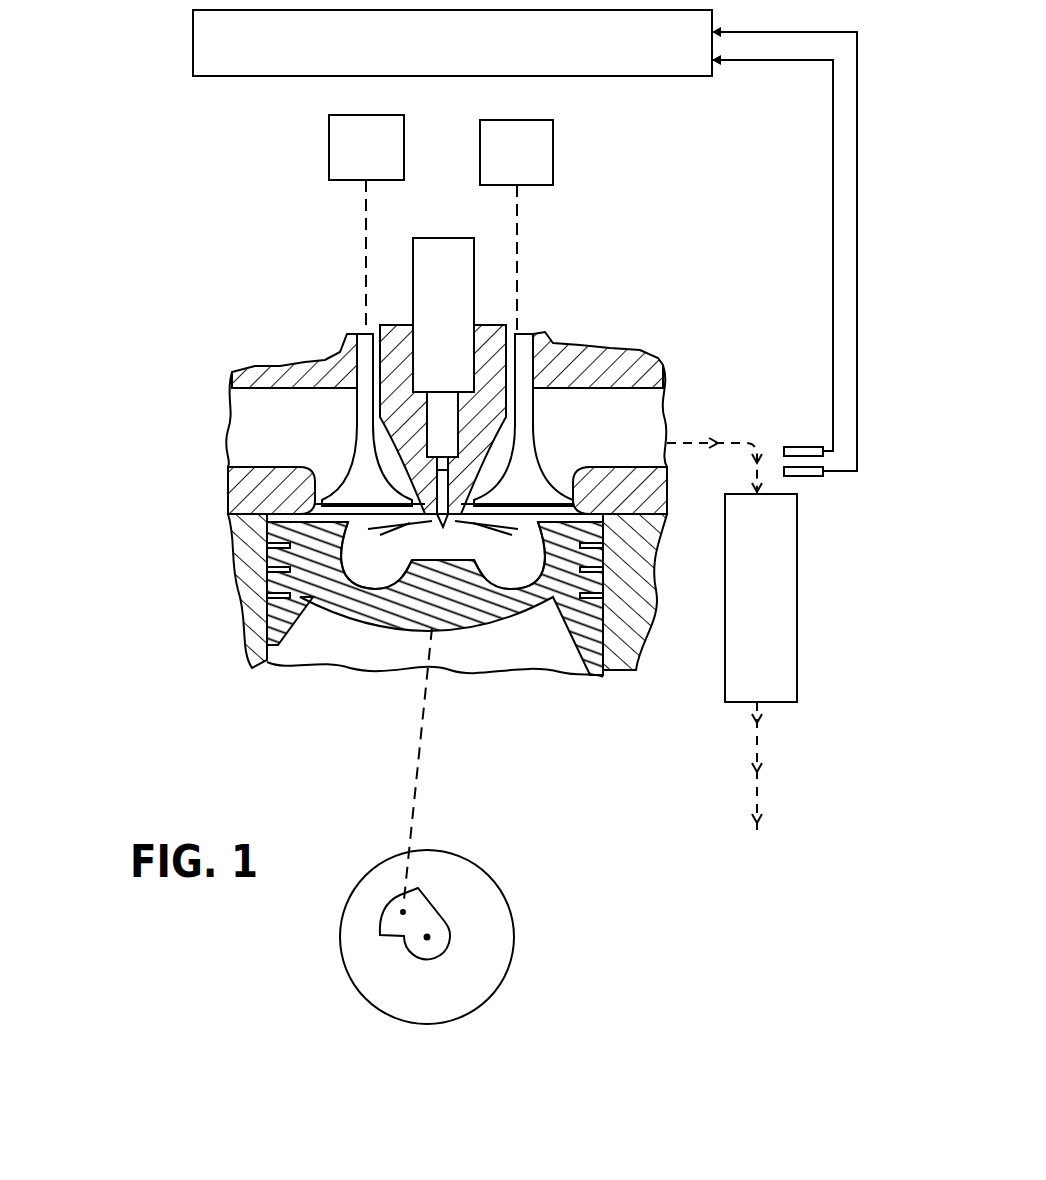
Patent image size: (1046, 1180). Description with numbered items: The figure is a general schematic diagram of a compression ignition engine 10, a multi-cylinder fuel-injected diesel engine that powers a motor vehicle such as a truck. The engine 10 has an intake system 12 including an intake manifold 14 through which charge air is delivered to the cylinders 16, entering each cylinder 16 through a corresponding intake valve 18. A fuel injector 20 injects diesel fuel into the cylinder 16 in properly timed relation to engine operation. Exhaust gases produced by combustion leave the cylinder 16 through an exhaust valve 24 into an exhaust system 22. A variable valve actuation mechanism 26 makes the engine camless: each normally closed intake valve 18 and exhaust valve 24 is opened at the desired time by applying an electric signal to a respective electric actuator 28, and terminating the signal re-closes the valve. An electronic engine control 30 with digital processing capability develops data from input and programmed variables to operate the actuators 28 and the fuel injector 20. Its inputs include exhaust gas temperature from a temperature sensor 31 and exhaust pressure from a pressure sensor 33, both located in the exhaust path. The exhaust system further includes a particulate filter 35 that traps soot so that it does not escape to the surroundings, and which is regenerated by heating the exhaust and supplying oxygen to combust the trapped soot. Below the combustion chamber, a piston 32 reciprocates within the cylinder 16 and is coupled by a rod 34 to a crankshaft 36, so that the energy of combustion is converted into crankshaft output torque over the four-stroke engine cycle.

The internal combustion engine 10 is at (147, 298).
The intake system 12 is at (158, 482).
The intake manifold 14 is at (255, 417).
The cylinders 16 is at (283, 660).
The intake valve 18 is at (367, 355).
The fuel injectors 20 is at (413, 262).
The exhaust system 22 is at (672, 411).
The exhaust valve 24 is at (522, 355).
The variable valve actuation mechanism 26 is at (603, 170).
The electric actuator 28 is at (351, 163).
The electronic engine control 30 is at (192, 75).
The temperature sensor 31 is at (813, 447).
The pistons 32 is at (477, 598).
The pressure sensor 33 is at (803, 476).
The rods 34 is at (422, 755).
The particulate filter 35 is at (725, 691).
The crankshaft 36 is at (423, 901).